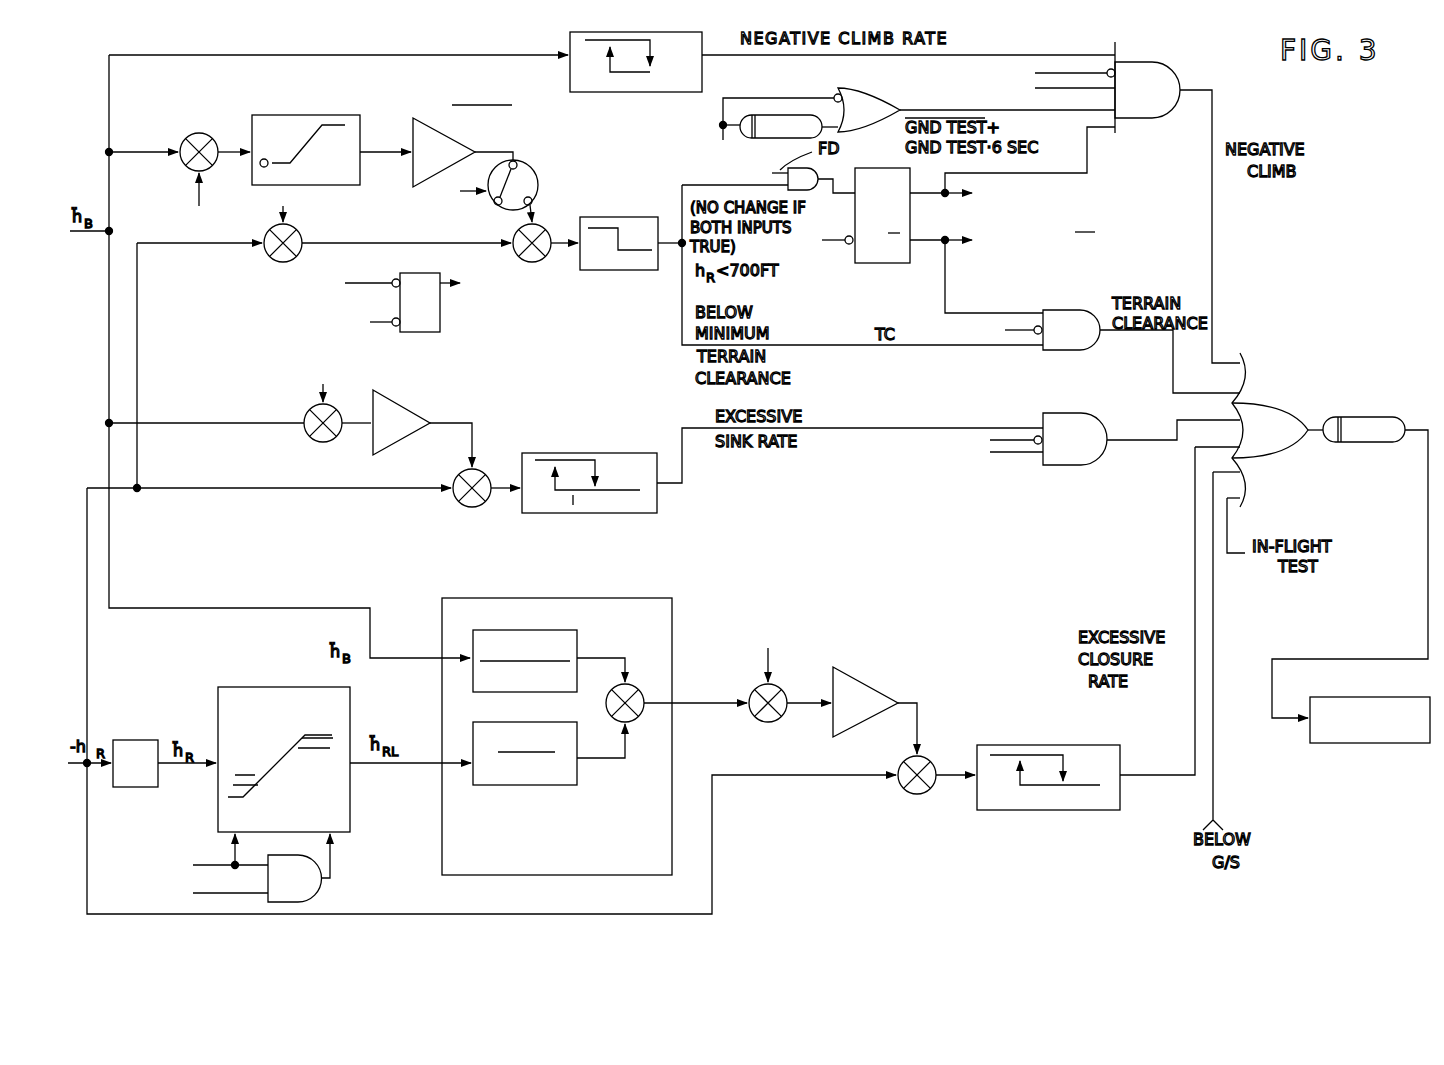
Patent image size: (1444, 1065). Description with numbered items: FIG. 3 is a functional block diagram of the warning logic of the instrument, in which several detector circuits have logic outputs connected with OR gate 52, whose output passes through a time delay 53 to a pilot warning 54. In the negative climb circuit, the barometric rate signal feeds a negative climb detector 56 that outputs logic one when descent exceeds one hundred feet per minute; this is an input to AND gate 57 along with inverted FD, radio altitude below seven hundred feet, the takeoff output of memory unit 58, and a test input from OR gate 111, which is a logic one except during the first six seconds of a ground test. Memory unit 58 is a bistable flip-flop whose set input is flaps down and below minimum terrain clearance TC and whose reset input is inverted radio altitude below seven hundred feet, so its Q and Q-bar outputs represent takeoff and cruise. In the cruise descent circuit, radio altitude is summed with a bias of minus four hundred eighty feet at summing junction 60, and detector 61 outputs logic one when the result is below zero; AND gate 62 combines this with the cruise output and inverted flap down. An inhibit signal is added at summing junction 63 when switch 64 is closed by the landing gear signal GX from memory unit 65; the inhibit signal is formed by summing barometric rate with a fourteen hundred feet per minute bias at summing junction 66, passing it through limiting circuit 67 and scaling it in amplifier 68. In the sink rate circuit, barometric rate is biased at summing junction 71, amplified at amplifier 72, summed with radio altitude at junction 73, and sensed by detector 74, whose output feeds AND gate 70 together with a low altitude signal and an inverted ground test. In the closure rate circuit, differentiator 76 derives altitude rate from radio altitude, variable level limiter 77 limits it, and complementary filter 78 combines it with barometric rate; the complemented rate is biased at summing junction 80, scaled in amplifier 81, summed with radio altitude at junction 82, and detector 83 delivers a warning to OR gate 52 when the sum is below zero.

The OR gate 52 is at (1265, 412).
The time delay 53 is at (1360, 417).
The pilot warning 54 is at (1355, 743).
The negative climb detector 56 is at (568, 45).
The AND gate 57 is at (1145, 72).
The memory unit 58 is at (878, 263).
The summing junction 60 is at (278, 258).
The detector 61 is at (600, 262).
The AND gate 62 is at (1072, 312).
The summing junction 63 is at (528, 262).
The switch 64 is at (505, 187).
The memory unit 65 is at (400, 338).
The summing junction 66 is at (200, 147).
The limiting circuit 67 is at (287, 122).
The amplifier 68 is at (421, 178).
The AND gate 70 is at (1072, 422).
The summing junction 71 is at (327, 441).
The amplifier 72 is at (410, 415).
The summing junction 73 is at (478, 507).
The detector 74 is at (570, 513).
The differentiator 76 is at (128, 740).
The variable level limiter 77 is at (228, 692).
The complementary filter 78 is at (634, 630).
The summing junction 80 is at (770, 722).
The amplifier 81 is at (845, 684).
The summing junction 82 is at (908, 793).
The detector 83 is at (995, 808).
The OR gate 111 is at (880, 95).